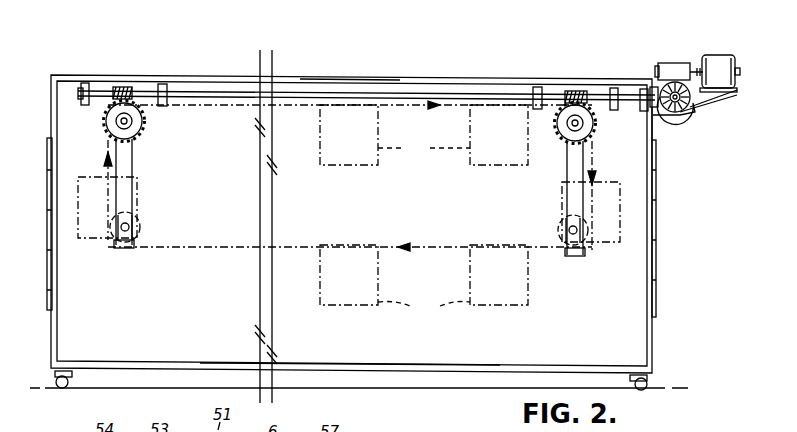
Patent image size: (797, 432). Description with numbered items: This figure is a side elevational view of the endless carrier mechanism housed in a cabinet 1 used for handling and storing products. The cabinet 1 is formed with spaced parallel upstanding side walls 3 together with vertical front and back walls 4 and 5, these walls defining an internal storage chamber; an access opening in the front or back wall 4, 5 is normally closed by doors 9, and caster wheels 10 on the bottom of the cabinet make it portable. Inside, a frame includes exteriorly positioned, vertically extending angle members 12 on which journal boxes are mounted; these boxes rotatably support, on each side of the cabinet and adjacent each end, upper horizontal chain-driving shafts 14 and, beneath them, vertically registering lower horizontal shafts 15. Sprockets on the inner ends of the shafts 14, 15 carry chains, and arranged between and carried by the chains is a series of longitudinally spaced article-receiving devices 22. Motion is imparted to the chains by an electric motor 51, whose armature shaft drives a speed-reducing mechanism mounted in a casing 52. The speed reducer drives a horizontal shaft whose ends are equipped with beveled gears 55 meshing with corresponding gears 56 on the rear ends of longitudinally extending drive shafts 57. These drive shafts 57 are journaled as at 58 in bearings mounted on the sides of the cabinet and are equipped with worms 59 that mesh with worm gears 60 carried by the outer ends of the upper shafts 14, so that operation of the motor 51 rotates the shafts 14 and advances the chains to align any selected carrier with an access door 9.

The cabinet 1 is at (408, 66).
The side walls 3 is at (630, 278).
The front wall 4 is at (652, 135).
The back wall 5 is at (51, 92).
The doors 9 is at (47, 208).
The caster wheels 10 is at (66, 386).
The angle members 12 is at (126, 172).
The chain-driving shafts 14 is at (126, 120).
The lower horizontal shafts 15 is at (131, 229).
The article-receiving devices 22 is at (349, 210).
The electric motor 51 is at (722, 64).
The casing 52 is at (670, 66).
The beveled gears 55 is at (695, 118).
The gears 56 is at (662, 95).
The drive shafts 57 is at (451, 92).
The journals 58 is at (167, 94).
The worms 59 is at (122, 88).
The worm gears 60 is at (133, 131).